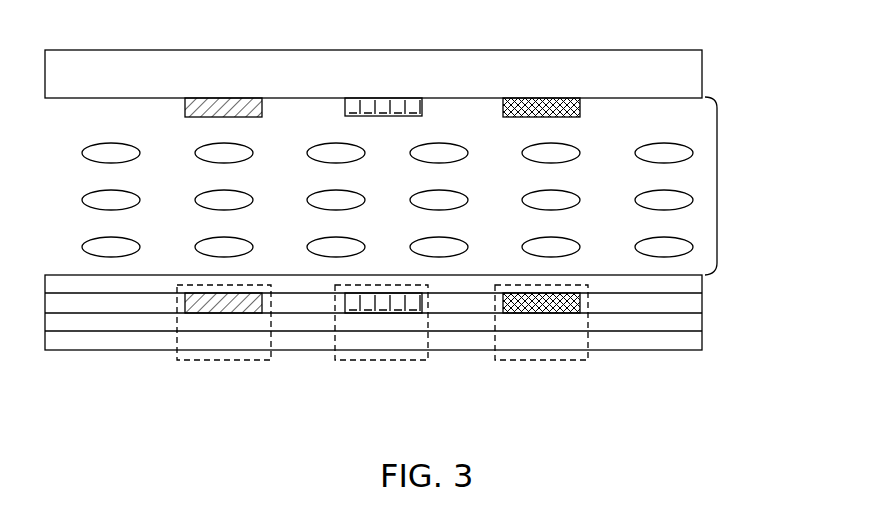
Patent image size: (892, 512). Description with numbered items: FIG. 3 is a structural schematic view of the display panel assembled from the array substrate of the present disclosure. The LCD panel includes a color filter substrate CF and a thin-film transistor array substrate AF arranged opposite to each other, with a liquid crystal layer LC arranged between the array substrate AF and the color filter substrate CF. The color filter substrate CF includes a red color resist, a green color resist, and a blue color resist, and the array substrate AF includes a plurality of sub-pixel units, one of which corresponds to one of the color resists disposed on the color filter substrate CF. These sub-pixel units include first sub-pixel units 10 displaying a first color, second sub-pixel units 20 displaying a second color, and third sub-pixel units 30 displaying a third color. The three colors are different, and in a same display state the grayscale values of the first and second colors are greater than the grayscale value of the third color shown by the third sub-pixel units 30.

The color filter substrate CF is at (702, 80).
The liquid crystal layer LC is at (717, 182).
The thin-film transistor array substrate AF is at (708, 313).
The first sub-pixel unit 10 is at (258, 360).
The second sub-pixel unit 20 is at (410, 360).
The third sub-pixel unit 30 is at (572, 360).